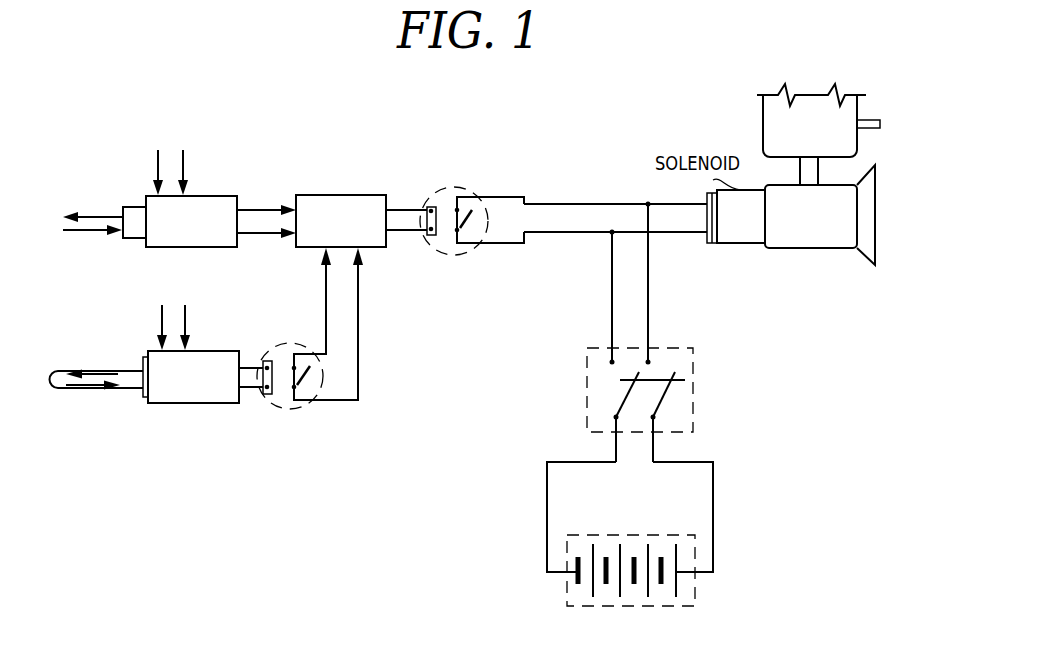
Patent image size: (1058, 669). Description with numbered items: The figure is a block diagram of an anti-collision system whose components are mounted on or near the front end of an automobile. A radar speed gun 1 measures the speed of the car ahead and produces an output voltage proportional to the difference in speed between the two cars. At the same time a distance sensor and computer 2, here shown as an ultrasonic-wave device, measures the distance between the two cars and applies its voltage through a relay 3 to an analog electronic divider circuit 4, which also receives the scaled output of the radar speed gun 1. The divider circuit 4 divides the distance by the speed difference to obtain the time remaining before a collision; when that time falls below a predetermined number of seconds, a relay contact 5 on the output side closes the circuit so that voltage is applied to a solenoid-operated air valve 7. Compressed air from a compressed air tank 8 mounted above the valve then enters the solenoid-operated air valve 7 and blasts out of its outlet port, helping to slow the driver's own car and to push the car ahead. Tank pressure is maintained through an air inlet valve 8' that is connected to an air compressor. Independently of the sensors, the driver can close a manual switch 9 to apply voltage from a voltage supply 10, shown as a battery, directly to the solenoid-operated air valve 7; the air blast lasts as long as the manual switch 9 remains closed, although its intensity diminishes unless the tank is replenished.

The radar speed gun 1 is at (219, 195).
The distance sensor and computer 2 is at (221, 350).
The relay 3 is at (296, 414).
The analog electronic divider circuit 4 is at (343, 195).
The relay contact switch 5 is at (453, 188).
The solenoid-operated air valve 7 is at (877, 218).
The compressed air tank 8 is at (789, 134).
The air inlet valve 8' is at (897, 128).
The manual switch 9 is at (587, 388).
The voltage supply 10 is at (567, 595).